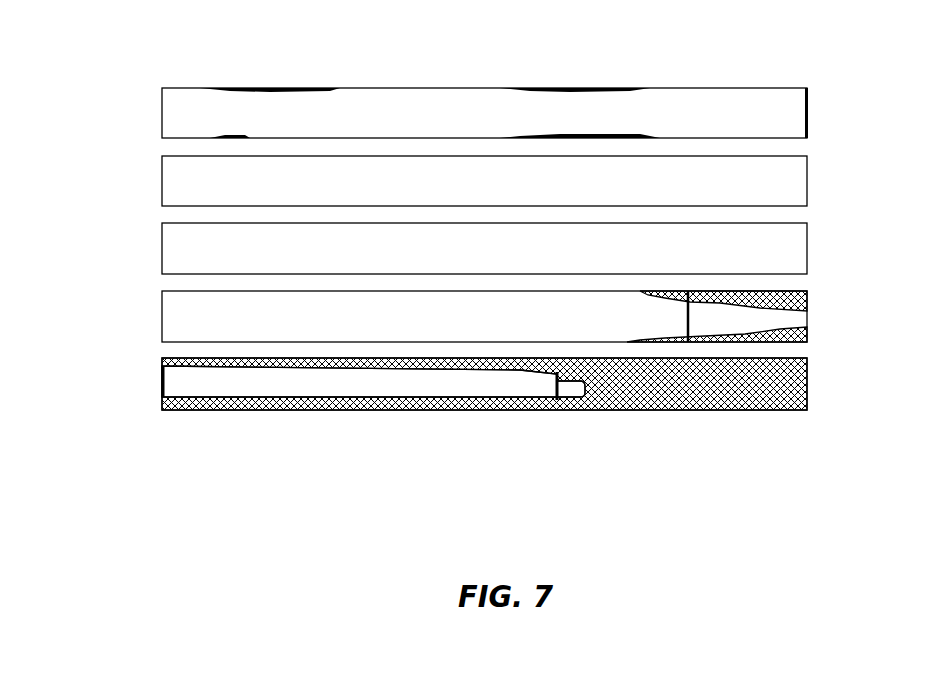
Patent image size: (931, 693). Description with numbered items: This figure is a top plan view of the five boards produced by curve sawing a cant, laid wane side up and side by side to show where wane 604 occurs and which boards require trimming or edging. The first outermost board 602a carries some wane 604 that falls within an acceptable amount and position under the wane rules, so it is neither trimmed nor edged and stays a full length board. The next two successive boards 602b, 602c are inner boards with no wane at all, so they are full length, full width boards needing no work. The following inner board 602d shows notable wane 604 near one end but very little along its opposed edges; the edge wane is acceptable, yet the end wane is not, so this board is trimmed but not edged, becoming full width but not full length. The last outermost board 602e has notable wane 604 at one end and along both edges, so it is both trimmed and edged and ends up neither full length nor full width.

The first outermost board 602a is at (162, 115).
The inner board 602b is at (162, 178).
The inner board 602c is at (162, 247).
The inner board 602d is at (162, 314).
The outermost board 602e is at (162, 380).
The wane 604 is at (553, 87).